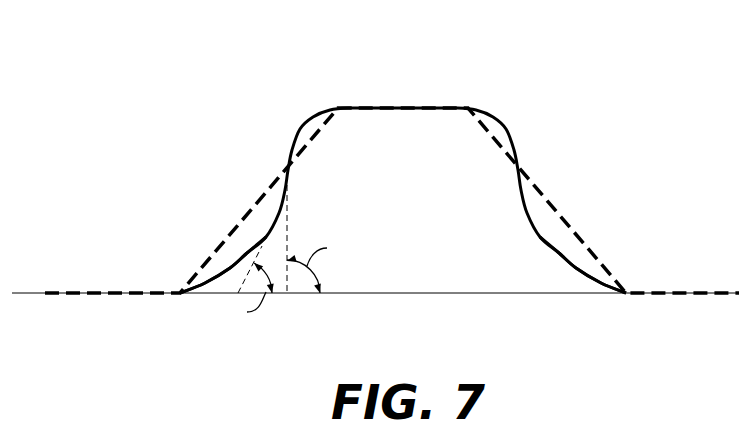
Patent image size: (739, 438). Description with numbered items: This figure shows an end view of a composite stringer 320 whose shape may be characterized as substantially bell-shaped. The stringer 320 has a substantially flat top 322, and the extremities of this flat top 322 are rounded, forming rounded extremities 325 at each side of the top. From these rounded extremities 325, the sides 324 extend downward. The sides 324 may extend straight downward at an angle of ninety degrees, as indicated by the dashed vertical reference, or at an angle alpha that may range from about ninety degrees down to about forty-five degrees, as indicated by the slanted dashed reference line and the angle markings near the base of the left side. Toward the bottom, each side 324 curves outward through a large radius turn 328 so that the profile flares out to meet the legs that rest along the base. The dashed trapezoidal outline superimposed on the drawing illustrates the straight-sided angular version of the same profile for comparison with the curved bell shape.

The stringer 320 is at (179, 78).
The substantially flat top 322 is at (435, 107).
The sides 324 is at (278, 178).
The rounded extremities 325 is at (303, 122).
The large radius turn 328 is at (243, 256).